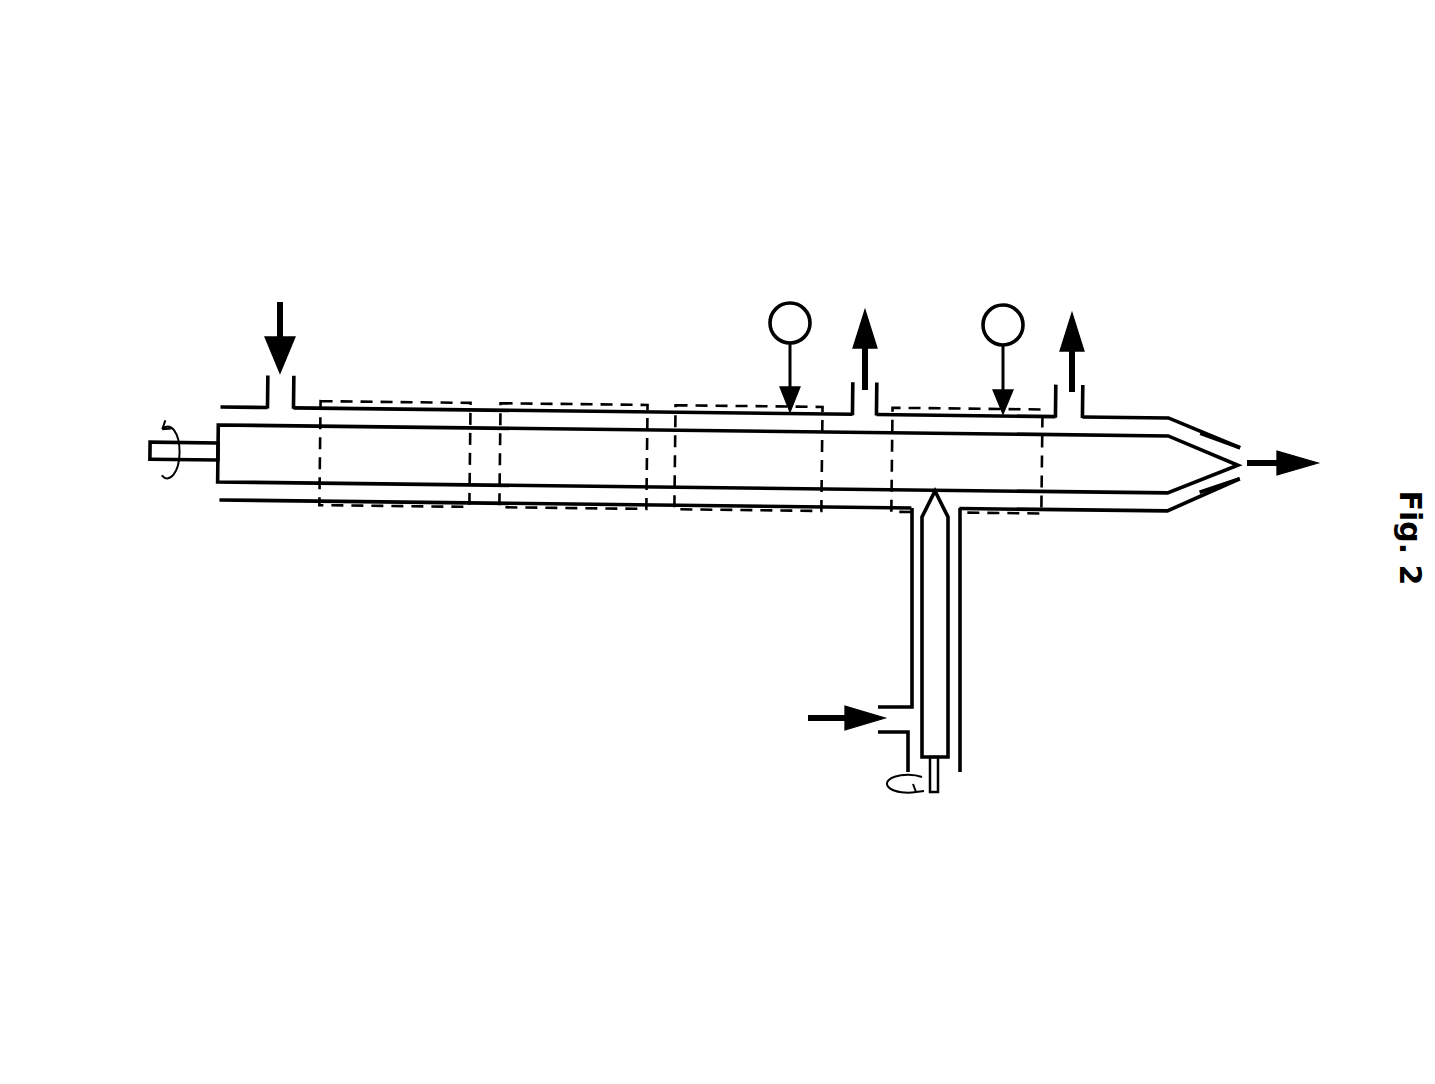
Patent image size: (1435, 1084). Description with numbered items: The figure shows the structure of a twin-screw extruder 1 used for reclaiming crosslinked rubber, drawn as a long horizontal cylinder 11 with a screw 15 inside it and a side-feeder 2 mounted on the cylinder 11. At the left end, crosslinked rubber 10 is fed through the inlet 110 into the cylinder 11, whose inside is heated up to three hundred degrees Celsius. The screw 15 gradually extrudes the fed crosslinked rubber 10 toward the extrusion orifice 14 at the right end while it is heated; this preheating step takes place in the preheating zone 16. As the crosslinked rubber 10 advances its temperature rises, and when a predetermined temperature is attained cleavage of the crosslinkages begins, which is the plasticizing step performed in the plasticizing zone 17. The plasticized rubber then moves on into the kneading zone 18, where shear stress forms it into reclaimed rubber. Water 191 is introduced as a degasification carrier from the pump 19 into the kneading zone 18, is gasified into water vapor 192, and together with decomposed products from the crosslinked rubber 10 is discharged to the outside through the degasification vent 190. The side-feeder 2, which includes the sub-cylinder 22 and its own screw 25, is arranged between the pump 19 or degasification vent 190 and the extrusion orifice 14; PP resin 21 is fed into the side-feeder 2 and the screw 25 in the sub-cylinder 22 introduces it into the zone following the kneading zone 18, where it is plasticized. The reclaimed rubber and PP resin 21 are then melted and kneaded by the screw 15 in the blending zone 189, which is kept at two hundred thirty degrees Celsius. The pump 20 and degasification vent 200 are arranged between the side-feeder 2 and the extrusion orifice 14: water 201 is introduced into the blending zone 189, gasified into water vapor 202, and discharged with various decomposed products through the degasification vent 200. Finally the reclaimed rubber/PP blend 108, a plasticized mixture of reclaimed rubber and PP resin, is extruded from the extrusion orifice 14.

The twin-screw extruder 1 is at (473, 634).
The side-feeder 2 is at (889, 641).
The crosslinked rubber 10 is at (285, 310).
The cylinder 11 is at (300, 500).
The extrusion orifice 14 is at (1248, 488).
The screw 15 is at (245, 463).
The preheating zone 16 is at (388, 507).
The plasticizing zone 17 is at (563, 510).
The kneading zone 18 is at (742, 513).
The blending zone 189 is at (988, 518).
The pump 19 is at (786, 303).
The pump 20 is at (1003, 305).
The degasification vent 190 is at (879, 395).
The water 191 is at (788, 362).
The water vapor 192 is at (860, 364).
The degasification vent 200 is at (1085, 399).
The water 201 is at (1000, 362).
The water vapor 202 is at (1080, 364).
The PP resin 21 is at (822, 722).
The sub-cylinder 22 is at (960, 690).
The screw 25 is at (935, 729).
The reclaimed rubber/PP blend 108 is at (1291, 478).
The inlet 110 is at (296, 387).